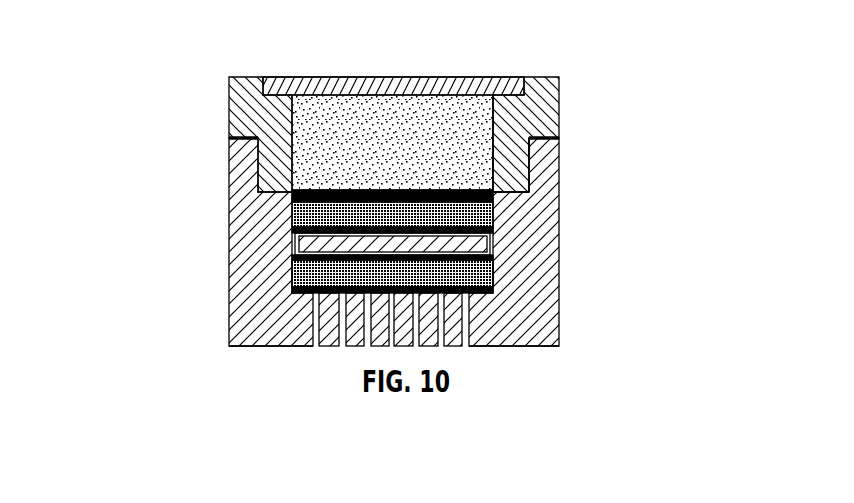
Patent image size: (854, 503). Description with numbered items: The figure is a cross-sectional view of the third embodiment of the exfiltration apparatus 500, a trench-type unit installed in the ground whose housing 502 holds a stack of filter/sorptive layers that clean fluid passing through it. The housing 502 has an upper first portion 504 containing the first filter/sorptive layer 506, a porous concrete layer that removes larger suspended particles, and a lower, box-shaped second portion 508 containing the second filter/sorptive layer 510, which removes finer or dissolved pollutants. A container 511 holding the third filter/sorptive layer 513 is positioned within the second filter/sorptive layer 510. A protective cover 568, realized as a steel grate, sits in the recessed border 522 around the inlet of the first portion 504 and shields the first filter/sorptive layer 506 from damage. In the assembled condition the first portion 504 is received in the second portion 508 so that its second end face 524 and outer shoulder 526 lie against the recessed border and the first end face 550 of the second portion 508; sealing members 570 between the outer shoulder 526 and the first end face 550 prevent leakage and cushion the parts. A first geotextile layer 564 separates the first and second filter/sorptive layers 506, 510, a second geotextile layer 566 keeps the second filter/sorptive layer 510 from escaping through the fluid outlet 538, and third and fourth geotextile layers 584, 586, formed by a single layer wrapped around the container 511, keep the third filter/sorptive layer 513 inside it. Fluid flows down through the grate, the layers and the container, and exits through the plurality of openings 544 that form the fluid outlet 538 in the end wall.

The exfiltration apparatus 500 is at (113, 48).
The housing 502 is at (650, 195).
The first portion 504 is at (540, 108).
The first filter/sorptive layer 506 is at (478, 130).
The second portion 508 is at (543, 322).
The second filter/sorptive layer 510 is at (493, 270).
The container 511 is at (292, 257).
The third filter/sorptive layer 513 is at (297, 238).
The recessed border 522 is at (285, 87).
The second end face 524 is at (513, 190).
The outer shoulder 526 is at (533, 146).
The fluid outlet 538 is at (463, 363).
The openings 544 is at (368, 347).
The first end face 550 is at (253, 138).
The first geotextile layer 564 is at (292, 190).
The second geotextile layer 566 is at (292, 294).
The protective cover 568 is at (480, 78).
The sealing members 570 is at (560, 137).
The third geotextile layer 584 is at (292, 223).
The fourth geotextile layer 586 is at (293, 284).